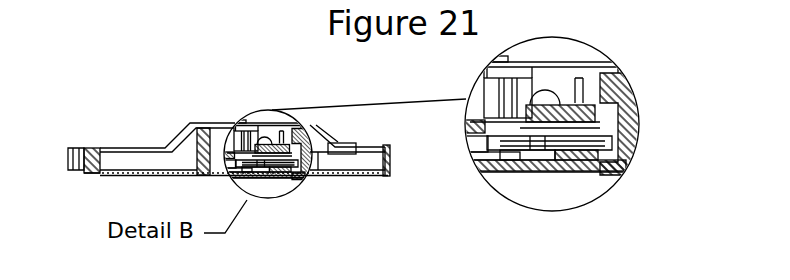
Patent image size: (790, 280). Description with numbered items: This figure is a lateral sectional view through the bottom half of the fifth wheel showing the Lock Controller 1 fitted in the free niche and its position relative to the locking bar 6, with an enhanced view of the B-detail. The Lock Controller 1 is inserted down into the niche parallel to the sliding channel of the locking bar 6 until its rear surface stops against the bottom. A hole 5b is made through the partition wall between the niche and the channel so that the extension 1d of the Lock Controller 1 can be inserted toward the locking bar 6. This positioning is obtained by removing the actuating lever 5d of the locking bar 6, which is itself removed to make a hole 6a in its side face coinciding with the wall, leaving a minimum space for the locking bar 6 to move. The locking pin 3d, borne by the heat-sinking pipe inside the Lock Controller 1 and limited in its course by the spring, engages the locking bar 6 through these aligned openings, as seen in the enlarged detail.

The Lock Controller 1 is at (568, 105).
The extension 1d is at (548, 168).
The locking pin 3d is at (495, 163).
The hole 5b is at (531, 163).
The actuating lever 5d is at (516, 72).
The locking bar 6 is at (464, 150).
The hole 6a is at (478, 160).